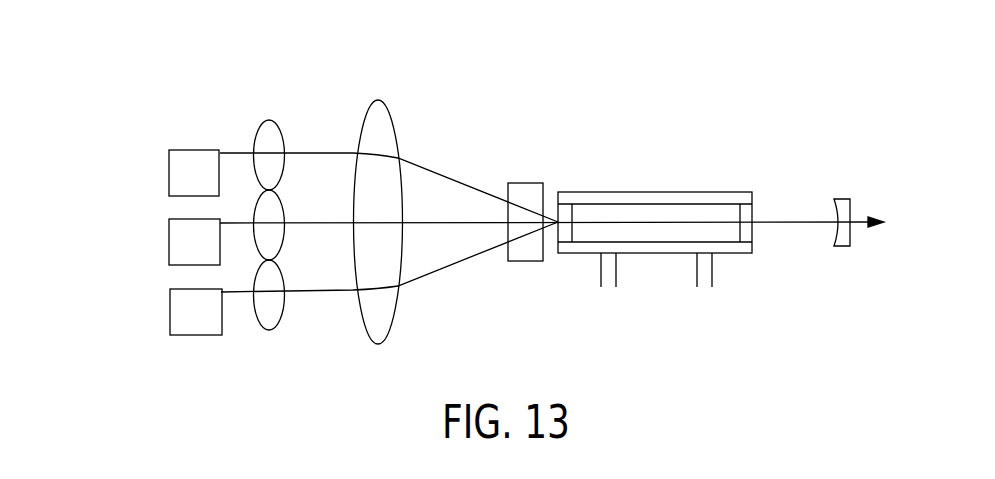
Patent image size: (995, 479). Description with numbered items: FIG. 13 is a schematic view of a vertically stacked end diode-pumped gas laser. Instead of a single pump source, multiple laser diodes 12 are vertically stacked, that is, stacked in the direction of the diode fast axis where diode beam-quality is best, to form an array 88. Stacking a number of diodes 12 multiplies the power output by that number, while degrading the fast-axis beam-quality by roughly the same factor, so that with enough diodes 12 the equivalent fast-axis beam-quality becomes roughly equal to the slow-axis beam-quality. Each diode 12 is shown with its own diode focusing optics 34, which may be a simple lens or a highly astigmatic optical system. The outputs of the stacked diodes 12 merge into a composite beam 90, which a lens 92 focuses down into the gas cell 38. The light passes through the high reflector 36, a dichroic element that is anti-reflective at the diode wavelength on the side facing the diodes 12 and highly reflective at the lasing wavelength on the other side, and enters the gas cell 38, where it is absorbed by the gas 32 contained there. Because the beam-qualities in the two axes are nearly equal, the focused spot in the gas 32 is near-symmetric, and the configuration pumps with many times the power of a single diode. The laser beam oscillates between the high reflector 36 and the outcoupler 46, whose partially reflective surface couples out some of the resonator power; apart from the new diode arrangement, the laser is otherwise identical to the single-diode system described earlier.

The array 88 is at (105, 82).
The laser diode 12 is at (168, 173).
The diode focusing optics 34 is at (255, 133).
The composite beam 90 is at (320, 152).
The lens 92 is at (383, 100).
The high reflector 36 is at (527, 183).
The gas cell 38 is at (655, 192).
The gas 32 is at (651, 236).
The outcoupler 46 is at (840, 247).